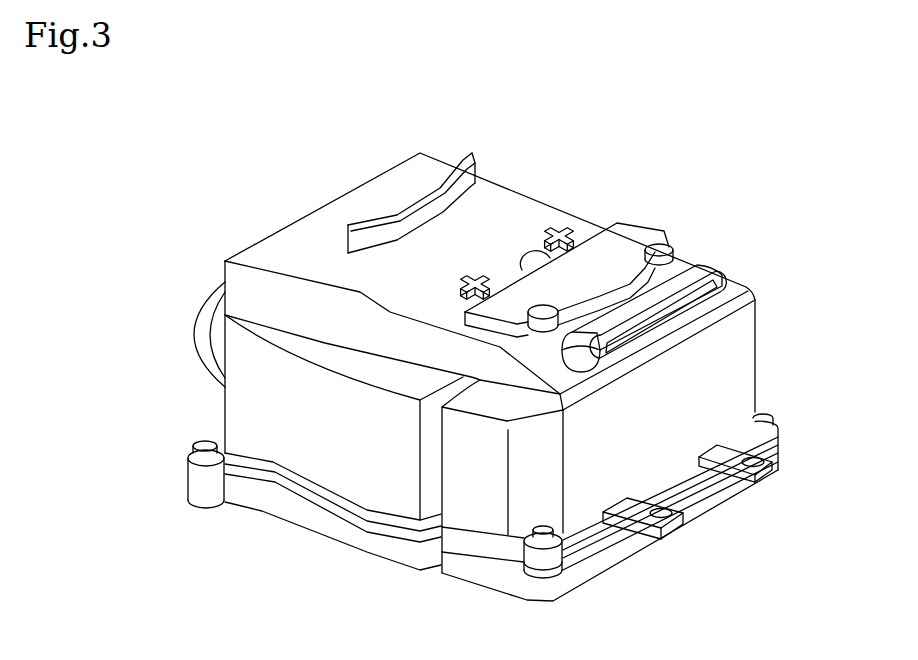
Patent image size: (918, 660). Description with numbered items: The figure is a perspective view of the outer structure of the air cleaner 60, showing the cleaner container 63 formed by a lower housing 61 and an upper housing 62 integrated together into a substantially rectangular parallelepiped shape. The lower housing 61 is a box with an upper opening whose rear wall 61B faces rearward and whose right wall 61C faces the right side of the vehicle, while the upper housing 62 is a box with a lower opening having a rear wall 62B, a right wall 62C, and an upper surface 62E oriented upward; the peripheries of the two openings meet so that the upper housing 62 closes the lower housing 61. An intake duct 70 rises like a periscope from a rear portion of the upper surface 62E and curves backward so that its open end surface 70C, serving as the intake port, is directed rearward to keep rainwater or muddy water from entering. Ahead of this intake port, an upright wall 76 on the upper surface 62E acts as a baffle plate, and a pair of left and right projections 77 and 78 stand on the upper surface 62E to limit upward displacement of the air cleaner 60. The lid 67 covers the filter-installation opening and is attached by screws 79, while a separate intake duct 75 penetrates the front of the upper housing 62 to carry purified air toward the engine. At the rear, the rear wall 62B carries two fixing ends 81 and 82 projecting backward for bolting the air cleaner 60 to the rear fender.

The air cleaner 60 is at (240, 152).
The lower housing 61 is at (260, 502).
The rear wall 61B is at (597, 566).
The right wall 61C is at (376, 552).
The upper housing 62 is at (225, 427).
The rear wall 62B is at (725, 381).
The right wall 62C is at (248, 418).
The upper surface 62E is at (398, 183).
The cleaner container 63 is at (122, 413).
The lid 67 is at (625, 240).
The intake duct 70 is at (695, 282).
The open end surface 70C is at (712, 288).
The intake duct 75 is at (200, 320).
The upright wall 76 is at (458, 168).
The projection 77 is at (482, 272).
The projection 78 is at (569, 226).
The screws 79 is at (531, 258).
The fixing end 81 is at (681, 514).
The fixing end 82 is at (778, 470).